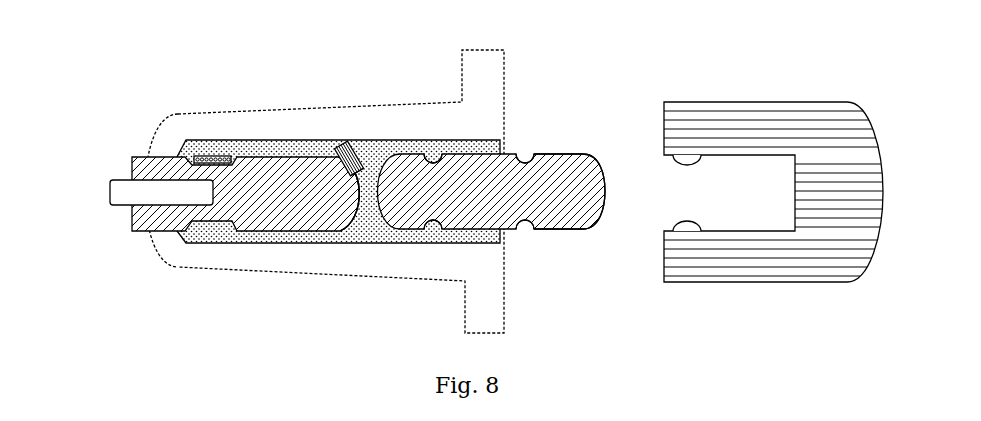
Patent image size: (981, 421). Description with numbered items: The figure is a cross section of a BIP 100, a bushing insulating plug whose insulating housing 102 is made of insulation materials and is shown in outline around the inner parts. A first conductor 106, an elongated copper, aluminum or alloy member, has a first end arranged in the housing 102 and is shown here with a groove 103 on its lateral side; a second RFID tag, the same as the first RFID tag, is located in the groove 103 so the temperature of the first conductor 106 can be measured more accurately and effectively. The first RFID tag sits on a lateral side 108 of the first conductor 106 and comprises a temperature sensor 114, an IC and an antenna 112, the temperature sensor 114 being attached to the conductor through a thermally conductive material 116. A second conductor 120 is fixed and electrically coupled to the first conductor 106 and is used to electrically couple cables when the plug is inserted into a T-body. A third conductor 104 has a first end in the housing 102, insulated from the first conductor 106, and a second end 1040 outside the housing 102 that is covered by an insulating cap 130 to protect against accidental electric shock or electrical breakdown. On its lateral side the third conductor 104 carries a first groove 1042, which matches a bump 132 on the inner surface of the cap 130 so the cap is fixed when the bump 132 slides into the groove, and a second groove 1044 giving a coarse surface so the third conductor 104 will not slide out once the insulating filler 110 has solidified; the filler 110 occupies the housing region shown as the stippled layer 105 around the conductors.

The BIP 100 is at (199, 37).
The insulating housing 102 is at (484, 50).
The groove 103 is at (168, 114).
The third conductor 104 is at (601, 196).
The ferrule end portion 1040 is at (556, 152).
The first groove 1042 is at (518, 154).
The second groove 1044 is at (438, 152).
The sleeve / jacket 105 is at (264, 150).
The first conductor 106 is at (134, 154).
The lateral side 108 is at (231, 156).
The insulating filler 110 is at (326, 151).
The antenna 112 is at (348, 146).
The temperature sensor 114 is at (356, 180).
The thermally conductive material 116 is at (342, 172).
The second conductor 120 is at (117, 186).
The insulating cap 130 is at (712, 101).
The bump 132 is at (697, 160).